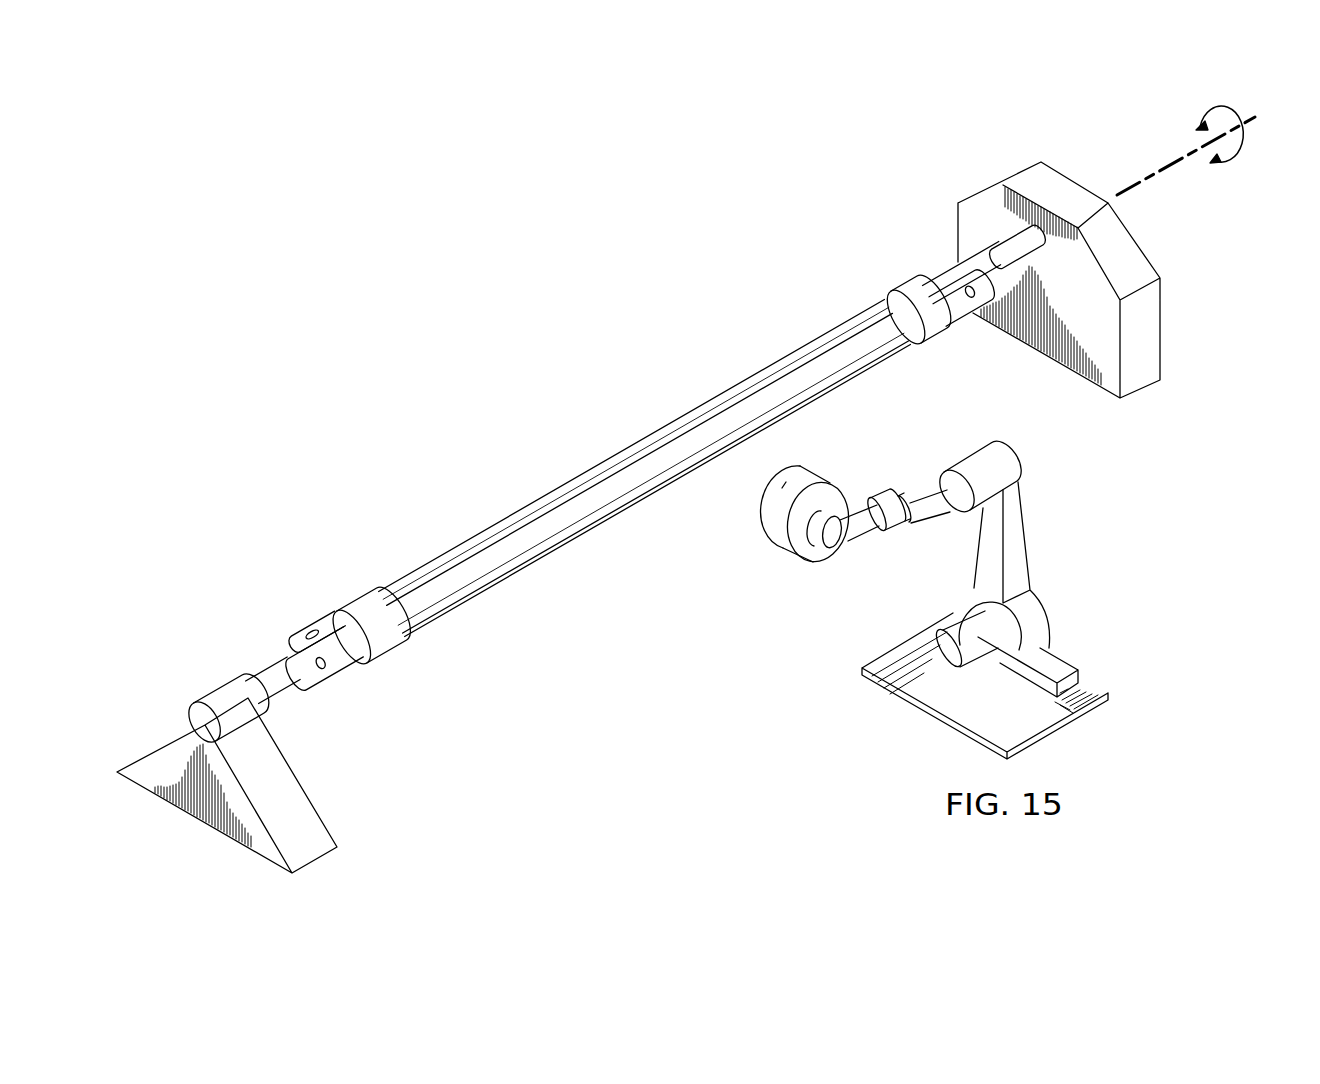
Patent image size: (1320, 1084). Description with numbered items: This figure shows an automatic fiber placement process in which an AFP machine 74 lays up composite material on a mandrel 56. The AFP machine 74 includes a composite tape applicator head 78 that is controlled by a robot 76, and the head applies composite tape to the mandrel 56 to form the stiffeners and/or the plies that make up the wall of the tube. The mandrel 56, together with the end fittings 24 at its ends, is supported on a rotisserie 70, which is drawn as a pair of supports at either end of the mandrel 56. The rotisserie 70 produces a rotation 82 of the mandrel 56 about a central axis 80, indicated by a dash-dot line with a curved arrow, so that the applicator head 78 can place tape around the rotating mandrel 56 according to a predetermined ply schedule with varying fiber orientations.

The end fittings 24 is at (358, 612).
The mandrel 56 is at (551, 466).
The rotisserie 70 is at (293, 782).
The AFP machine 74 is at (1076, 522).
The robot 76 is at (1065, 603).
The composite tape applicator head 78 is at (780, 553).
The central axis 80 is at (1137, 183).
The rotation 82 is at (1243, 148).